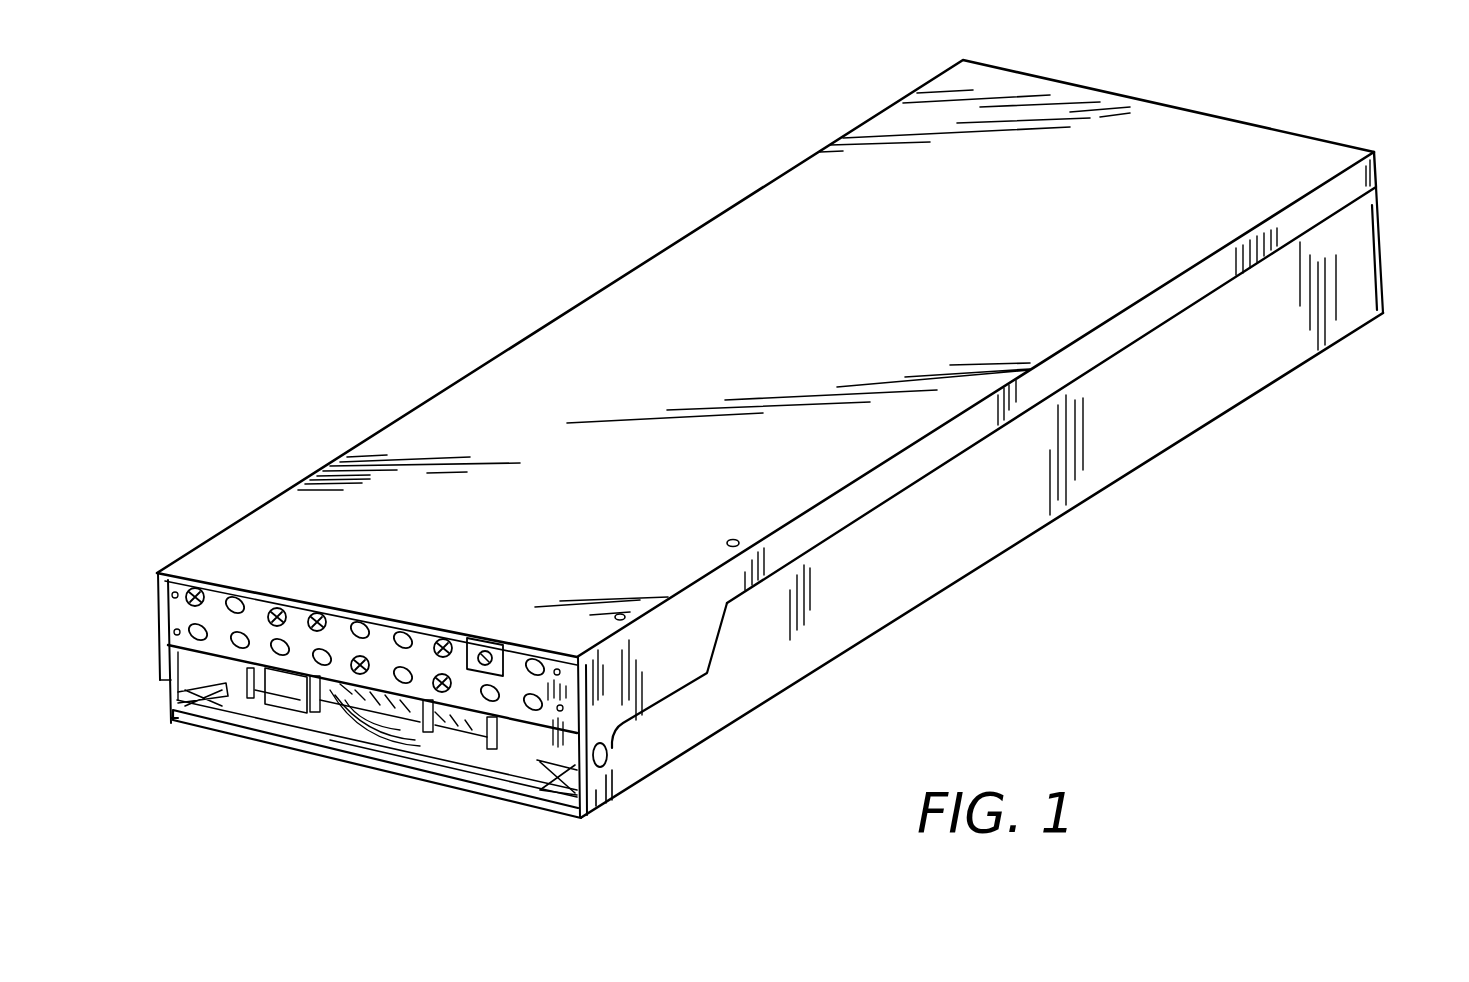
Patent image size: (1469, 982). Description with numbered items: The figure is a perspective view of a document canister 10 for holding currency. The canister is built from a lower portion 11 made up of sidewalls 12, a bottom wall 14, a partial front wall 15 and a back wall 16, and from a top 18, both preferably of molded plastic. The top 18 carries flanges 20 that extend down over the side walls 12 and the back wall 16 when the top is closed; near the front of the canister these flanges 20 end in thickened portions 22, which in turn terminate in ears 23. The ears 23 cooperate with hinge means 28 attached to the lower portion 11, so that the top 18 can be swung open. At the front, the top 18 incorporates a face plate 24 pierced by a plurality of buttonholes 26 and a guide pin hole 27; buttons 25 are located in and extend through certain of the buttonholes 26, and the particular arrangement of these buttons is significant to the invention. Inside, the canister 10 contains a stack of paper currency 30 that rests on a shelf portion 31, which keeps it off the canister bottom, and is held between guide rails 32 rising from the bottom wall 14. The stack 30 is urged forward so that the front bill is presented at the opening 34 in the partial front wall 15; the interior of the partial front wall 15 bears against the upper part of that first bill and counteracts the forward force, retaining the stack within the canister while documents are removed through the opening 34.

The document canister 10 is at (1003, 621).
The lower portion 11 is at (1150, 396).
The sidewalls 12 is at (1005, 495).
The bottom wall 14 is at (557, 808).
The partial front wall 15 is at (527, 740).
The back wall 16 is at (1388, 247).
The top 18 is at (577, 367).
The flanges 20 is at (1162, 300).
The thickened portions 22 is at (665, 653).
The ears 23 is at (623, 777).
The face plate 24 is at (180, 617).
The buttons 25 is at (323, 617).
The buttonholes 26 is at (235, 603).
The guide pin hole 27 is at (483, 648).
The hinge means 28 is at (610, 748).
The stack of paper currency 30 is at (330, 713).
The shelf portion 31 is at (403, 748).
The guide rails 32 is at (207, 707).
The opening 34 is at (168, 695).